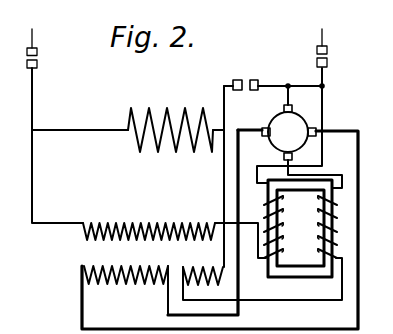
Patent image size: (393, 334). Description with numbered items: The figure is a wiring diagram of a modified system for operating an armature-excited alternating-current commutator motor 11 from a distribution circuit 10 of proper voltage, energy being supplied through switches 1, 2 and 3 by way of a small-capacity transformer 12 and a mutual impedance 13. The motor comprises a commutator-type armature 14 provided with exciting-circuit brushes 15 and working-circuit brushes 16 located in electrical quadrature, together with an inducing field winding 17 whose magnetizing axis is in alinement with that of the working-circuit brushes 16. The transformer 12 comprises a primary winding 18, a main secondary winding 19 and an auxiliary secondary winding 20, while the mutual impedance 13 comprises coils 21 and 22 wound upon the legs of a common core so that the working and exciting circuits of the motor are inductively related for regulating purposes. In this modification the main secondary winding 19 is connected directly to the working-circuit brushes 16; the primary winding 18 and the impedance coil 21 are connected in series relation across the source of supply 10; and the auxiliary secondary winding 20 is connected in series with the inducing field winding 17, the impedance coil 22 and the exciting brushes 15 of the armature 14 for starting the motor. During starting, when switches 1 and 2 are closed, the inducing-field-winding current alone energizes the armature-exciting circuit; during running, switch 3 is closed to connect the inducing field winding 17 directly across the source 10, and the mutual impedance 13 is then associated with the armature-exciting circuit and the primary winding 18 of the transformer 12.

The switch 1 is at (26, 60).
The switch 2 is at (327, 63).
The switch 3 is at (245, 80).
The distribution circuit 10 is at (36, 33).
The alternating-current commutator motor 11 is at (319, 110).
The transformer 12 is at (68, 270).
The mutual impedance 13 is at (310, 240).
The armature 14 is at (288, 132).
The exciting-circuit brushes 15 is at (284, 108).
The working-circuit brushes 16 is at (263, 128).
The inducing field winding 17 is at (164, 118).
The primary winding 18 is at (110, 229).
The main secondary winding 19 is at (96, 270).
The auxiliary secondary winding 20 is at (186, 272).
The impedance coil 21 is at (268, 215).
The impedance coil 22 is at (332, 228).